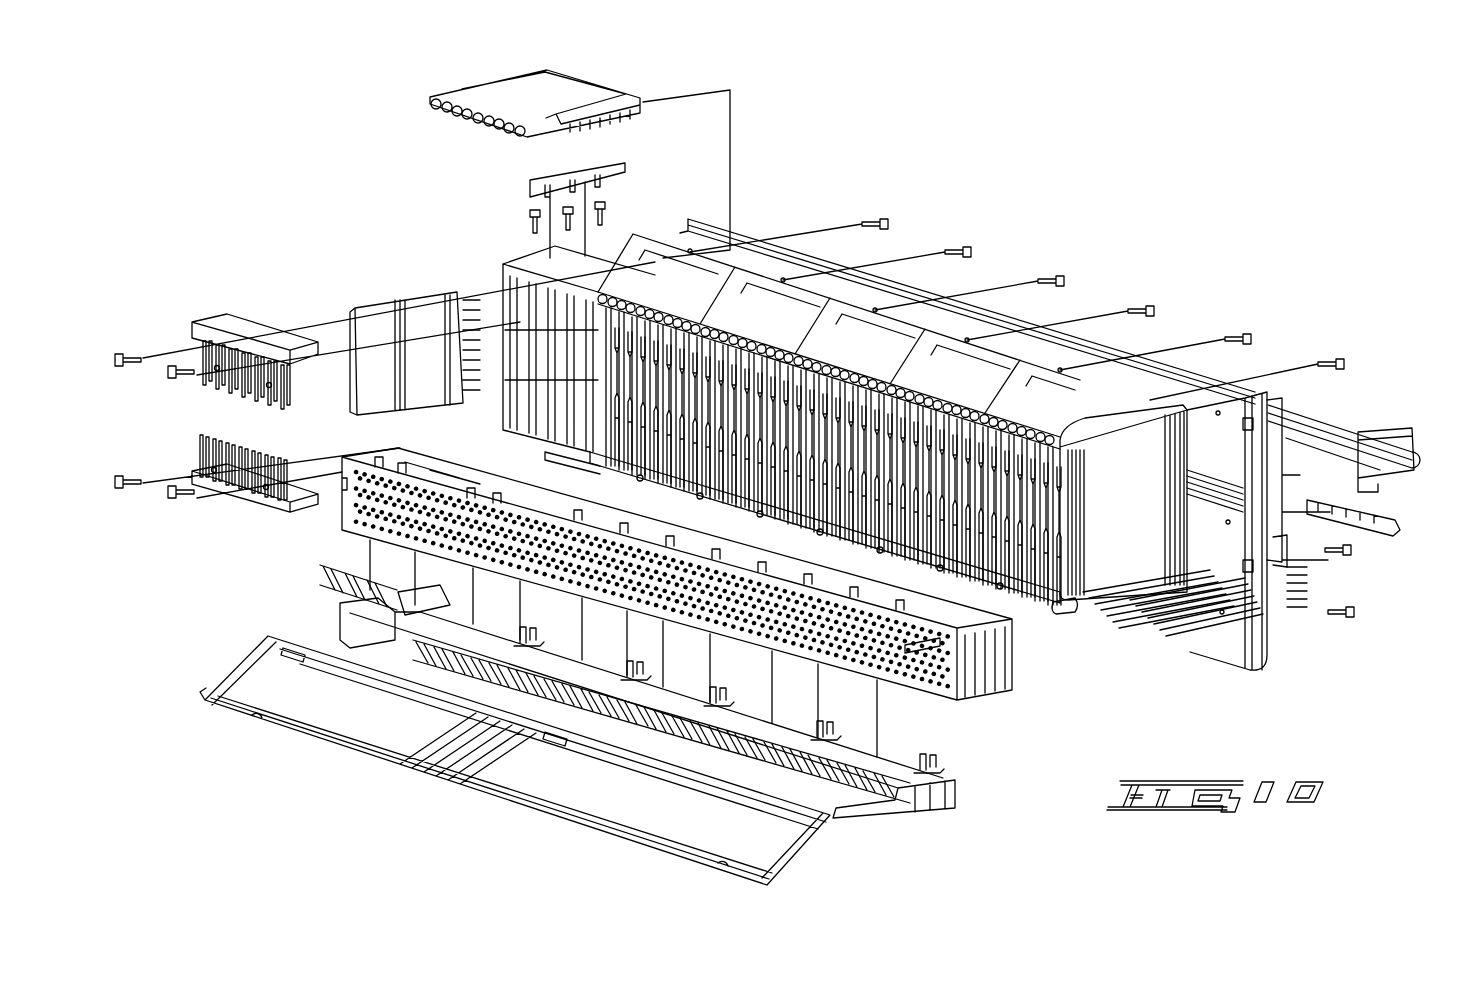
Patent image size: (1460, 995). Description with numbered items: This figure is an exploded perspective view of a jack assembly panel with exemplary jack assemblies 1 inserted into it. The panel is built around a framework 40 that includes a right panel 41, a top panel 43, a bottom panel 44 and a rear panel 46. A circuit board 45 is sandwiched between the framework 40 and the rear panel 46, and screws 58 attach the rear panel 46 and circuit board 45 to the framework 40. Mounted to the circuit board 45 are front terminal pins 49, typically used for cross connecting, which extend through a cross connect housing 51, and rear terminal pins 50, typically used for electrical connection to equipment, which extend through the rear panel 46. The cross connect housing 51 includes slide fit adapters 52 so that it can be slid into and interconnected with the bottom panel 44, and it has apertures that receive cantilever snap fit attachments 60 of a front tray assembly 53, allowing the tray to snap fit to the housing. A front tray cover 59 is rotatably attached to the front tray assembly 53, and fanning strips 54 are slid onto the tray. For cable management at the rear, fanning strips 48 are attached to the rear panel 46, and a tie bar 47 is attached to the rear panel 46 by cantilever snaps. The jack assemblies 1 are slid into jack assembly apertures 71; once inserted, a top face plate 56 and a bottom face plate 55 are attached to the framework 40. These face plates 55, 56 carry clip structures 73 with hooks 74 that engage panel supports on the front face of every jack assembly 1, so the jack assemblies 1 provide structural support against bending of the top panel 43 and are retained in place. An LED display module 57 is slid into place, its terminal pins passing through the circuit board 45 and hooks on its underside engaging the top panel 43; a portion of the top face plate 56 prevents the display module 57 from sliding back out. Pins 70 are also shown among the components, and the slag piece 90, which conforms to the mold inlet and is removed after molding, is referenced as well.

The jack assembly 1 is at (400, 280).
The framework 40 is at (1065, 622).
The right panel 41 is at (1133, 518).
The top panel 43 is at (633, 267).
The bottom panel 44 is at (1125, 598).
The circuit board 45 is at (1230, 551).
The rear panel 46 is at (1285, 652).
The tie bar 47 is at (1385, 470).
The fanning strips 48 is at (1385, 530).
The front terminal pins 49 is at (1185, 630).
The rear terminal pins 50 is at (1315, 605).
The cross connect housing 51 is at (940, 677).
The slide fit adapters 52 is at (565, 503).
The front tray assembly 53 is at (920, 800).
The fanning strips 54 is at (350, 600).
The bottom face plate 55 is at (258, 510).
The top face plate 56 is at (247, 330).
The LED display module 57 is at (505, 88).
The screws 58 is at (952, 250).
The front tray cover 59 is at (618, 815).
The cantilever snap fit attachment 60 is at (518, 640).
The pins 70 is at (863, 663).
The jack assembly apertures 71 is at (913, 537).
The clip structures 73 is at (232, 445).
The hooks 74 is at (270, 410).
The slag piece 90 is at (806, 560).